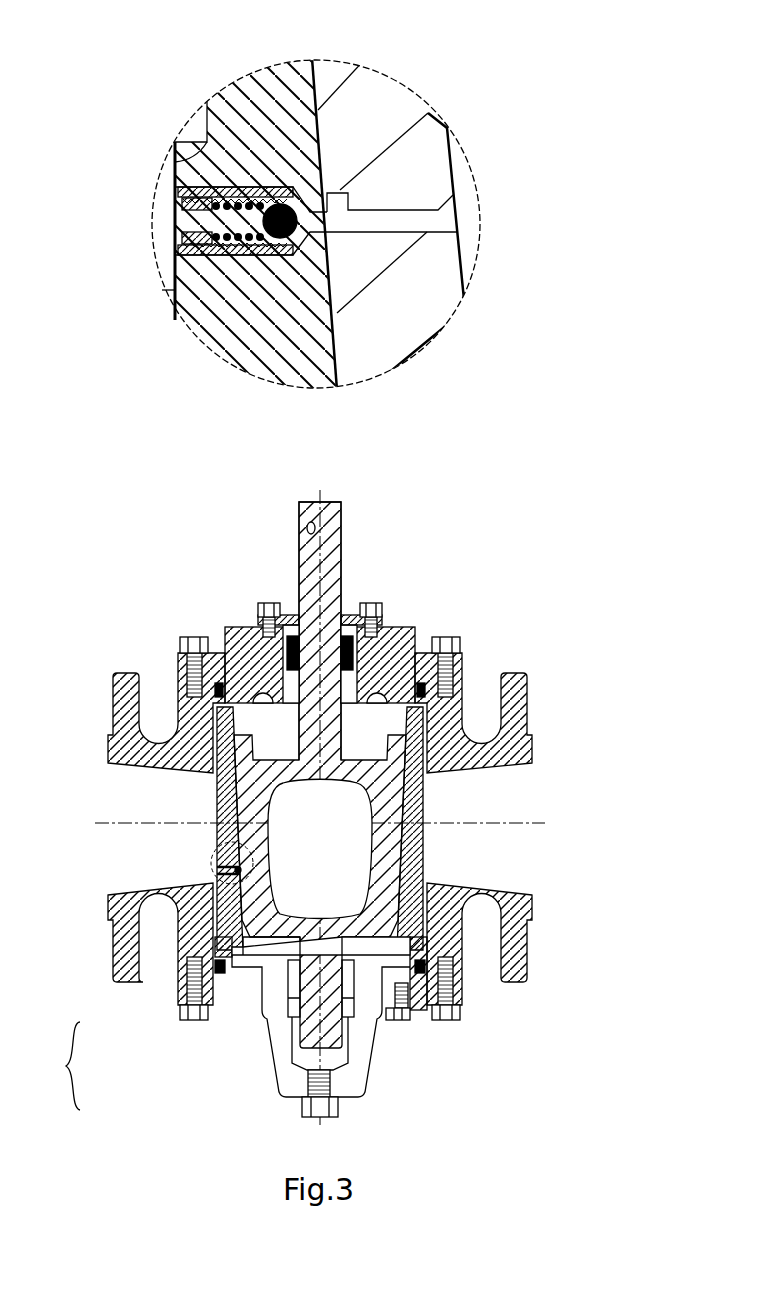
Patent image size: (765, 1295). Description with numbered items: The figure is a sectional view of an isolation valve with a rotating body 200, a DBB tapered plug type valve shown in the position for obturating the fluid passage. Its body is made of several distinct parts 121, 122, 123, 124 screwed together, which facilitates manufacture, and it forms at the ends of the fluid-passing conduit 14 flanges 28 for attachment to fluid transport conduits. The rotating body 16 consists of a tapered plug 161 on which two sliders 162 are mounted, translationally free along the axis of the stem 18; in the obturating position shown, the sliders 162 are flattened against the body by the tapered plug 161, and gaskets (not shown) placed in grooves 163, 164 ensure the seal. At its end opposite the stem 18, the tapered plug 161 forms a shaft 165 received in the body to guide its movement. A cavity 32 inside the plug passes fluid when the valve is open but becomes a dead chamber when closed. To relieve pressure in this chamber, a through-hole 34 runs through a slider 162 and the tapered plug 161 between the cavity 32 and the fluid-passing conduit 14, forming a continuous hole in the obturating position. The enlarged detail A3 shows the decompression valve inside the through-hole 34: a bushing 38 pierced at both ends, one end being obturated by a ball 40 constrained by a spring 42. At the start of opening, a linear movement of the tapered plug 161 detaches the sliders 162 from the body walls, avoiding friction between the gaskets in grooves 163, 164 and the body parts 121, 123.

The isolation valve with a rotating body 200 is at (191, 540).
The stem 18 is at (336, 556).
The cavity 32 is at (443, 175).
The fluid-passing conduit 14 is at (161, 303).
The body part 122 is at (226, 634).
The groove 164 is at (462, 706).
The body part 123 is at (118, 710).
The body part 121 is at (520, 717).
The groove 163 is at (193, 770).
The slider 162 is at (226, 374).
The tapered plug 161 is at (372, 93).
The shaft 165 is at (310, 1031).
The rotating body 16 is at (62, 1066).
The body part 124 is at (365, 1070).
The flange 28 is at (533, 972).
The bushing 38 is at (207, 141).
The spring 42 is at (236, 205).
The ball 40 is at (288, 250).
The through-hole 34 is at (432, 226).
The detail area A3 is at (206, 863).